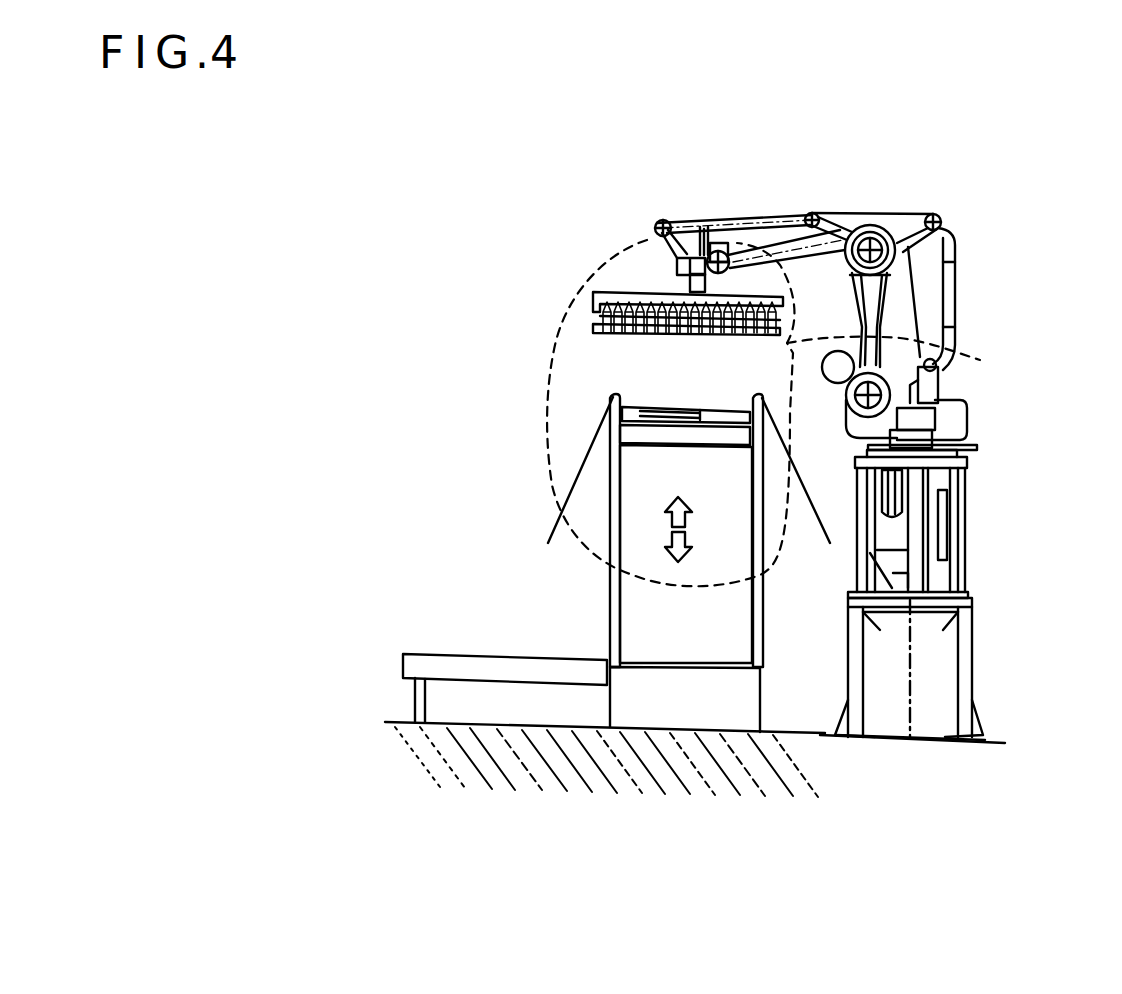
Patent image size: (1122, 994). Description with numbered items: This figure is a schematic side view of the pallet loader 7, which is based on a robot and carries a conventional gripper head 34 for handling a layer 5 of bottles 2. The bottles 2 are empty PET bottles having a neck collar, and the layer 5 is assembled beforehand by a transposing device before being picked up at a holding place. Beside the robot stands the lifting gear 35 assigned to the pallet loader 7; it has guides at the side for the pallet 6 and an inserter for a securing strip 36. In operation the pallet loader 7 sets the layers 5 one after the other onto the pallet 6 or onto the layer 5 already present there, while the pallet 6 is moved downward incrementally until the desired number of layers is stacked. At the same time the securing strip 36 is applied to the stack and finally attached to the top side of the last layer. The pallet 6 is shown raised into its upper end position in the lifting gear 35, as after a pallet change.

The bottles 2 is at (626, 333).
The layer 5 is at (593, 320).
The pallet 6 is at (620, 420).
The pallet loader 7 is at (948, 196).
The gripper head 34 is at (593, 292).
The lifting gear 35 is at (683, 633).
The securing strip 36 is at (553, 525).